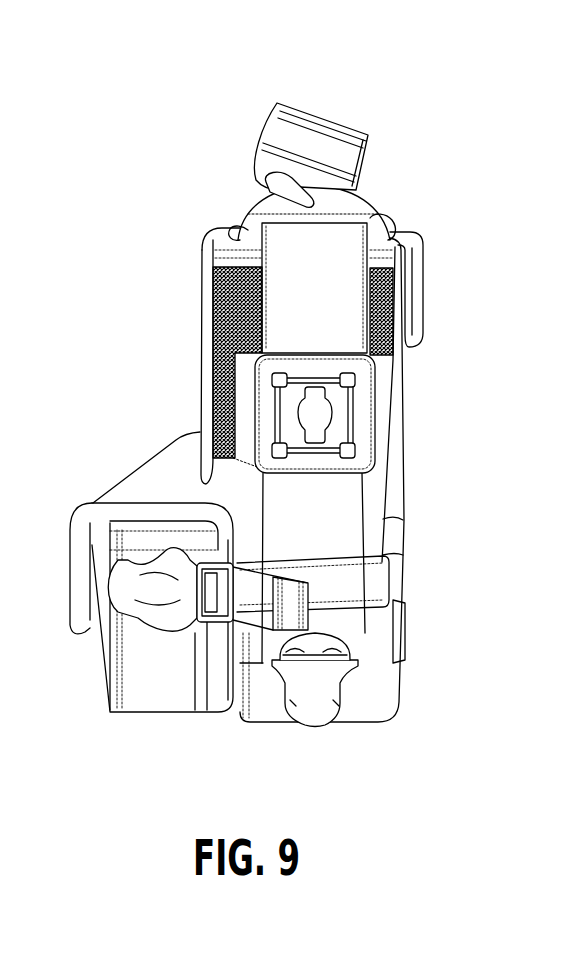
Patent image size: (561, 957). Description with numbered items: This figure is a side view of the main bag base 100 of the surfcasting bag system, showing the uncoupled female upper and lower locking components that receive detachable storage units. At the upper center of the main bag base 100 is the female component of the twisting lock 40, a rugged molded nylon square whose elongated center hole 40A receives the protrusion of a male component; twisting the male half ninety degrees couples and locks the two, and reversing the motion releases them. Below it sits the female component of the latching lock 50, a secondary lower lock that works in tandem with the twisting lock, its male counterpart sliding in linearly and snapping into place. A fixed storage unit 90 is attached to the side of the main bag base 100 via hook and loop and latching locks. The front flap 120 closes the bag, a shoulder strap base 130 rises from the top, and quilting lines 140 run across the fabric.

The twisting lock, female component 40 is at (367, 391).
The center hole in twisting lock, female component 40A is at (315, 414).
The latching lock, female component 50 is at (317, 672).
The fixed storage unit 90 is at (112, 712).
The main bag base 100 is at (362, 723).
The front flap 120 is at (202, 303).
The shoulder strap base 130 is at (333, 122).
The quilting lines 140 is at (405, 518).